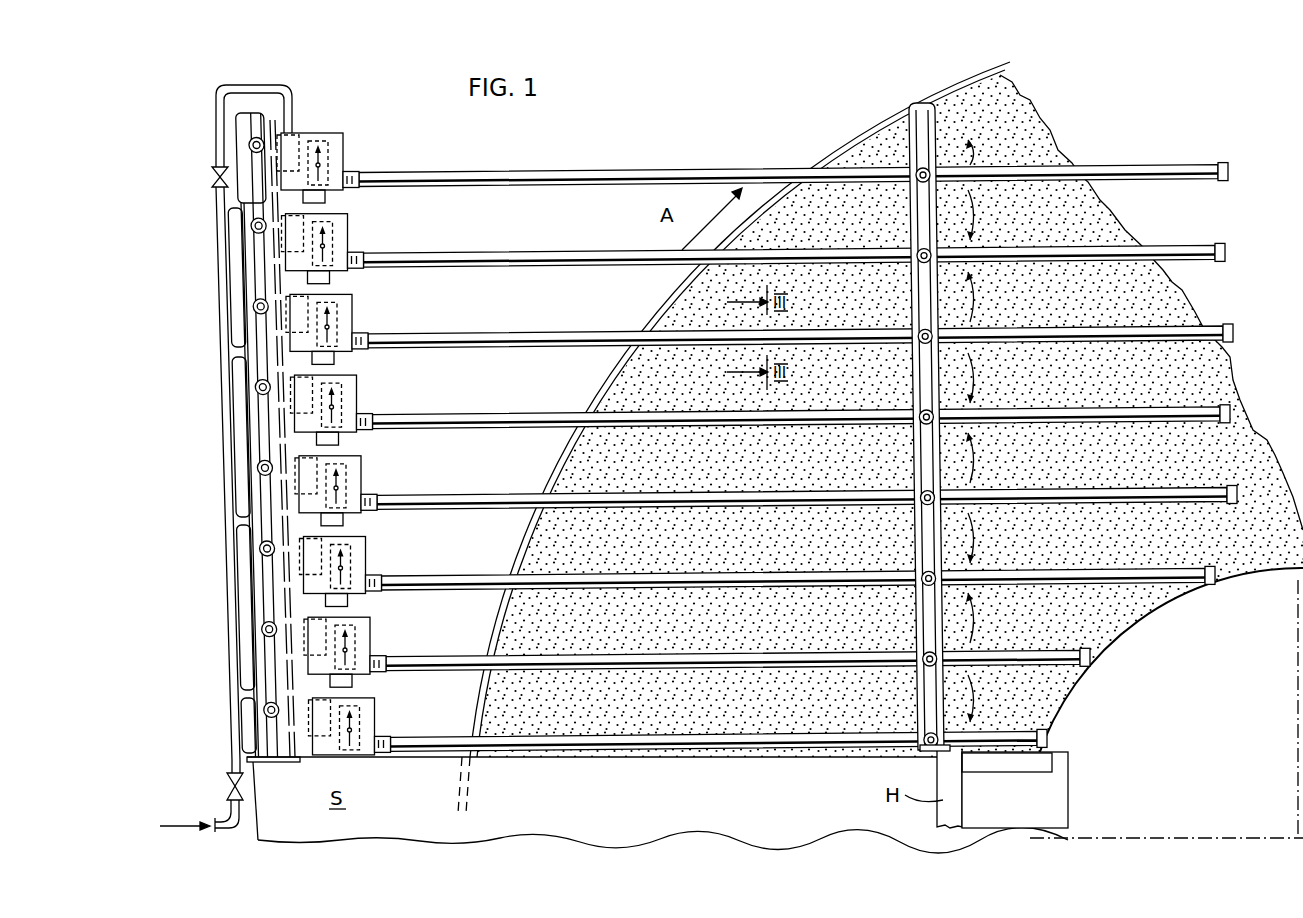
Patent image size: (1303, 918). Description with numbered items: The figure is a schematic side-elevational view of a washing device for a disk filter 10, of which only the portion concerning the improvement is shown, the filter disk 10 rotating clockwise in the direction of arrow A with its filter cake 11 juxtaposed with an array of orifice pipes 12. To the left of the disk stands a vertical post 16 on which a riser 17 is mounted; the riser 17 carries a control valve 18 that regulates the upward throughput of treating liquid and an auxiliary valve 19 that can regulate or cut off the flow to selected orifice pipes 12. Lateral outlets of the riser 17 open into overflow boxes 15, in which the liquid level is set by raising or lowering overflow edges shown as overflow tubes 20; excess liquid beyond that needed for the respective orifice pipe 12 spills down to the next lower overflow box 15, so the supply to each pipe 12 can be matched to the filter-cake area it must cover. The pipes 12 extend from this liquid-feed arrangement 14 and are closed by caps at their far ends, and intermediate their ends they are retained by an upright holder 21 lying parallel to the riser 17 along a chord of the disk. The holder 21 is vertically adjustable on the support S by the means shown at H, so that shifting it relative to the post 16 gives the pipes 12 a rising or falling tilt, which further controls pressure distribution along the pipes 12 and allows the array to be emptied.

The disk filter 10 is at (819, 152).
The filter cake 11 is at (873, 135).
The orifice pipes 12 is at (738, 772).
The liquid-feed arrangement 14 is at (292, 458).
The overflow boxes 15 is at (342, 632).
The vertical post 16 is at (265, 692).
The riser 17 is at (239, 628).
The control valve 18 is at (230, 783).
The auxiliary valve 19 is at (212, 177).
The overflow tubes 20 is at (345, 716).
The holder 21 is at (940, 378).